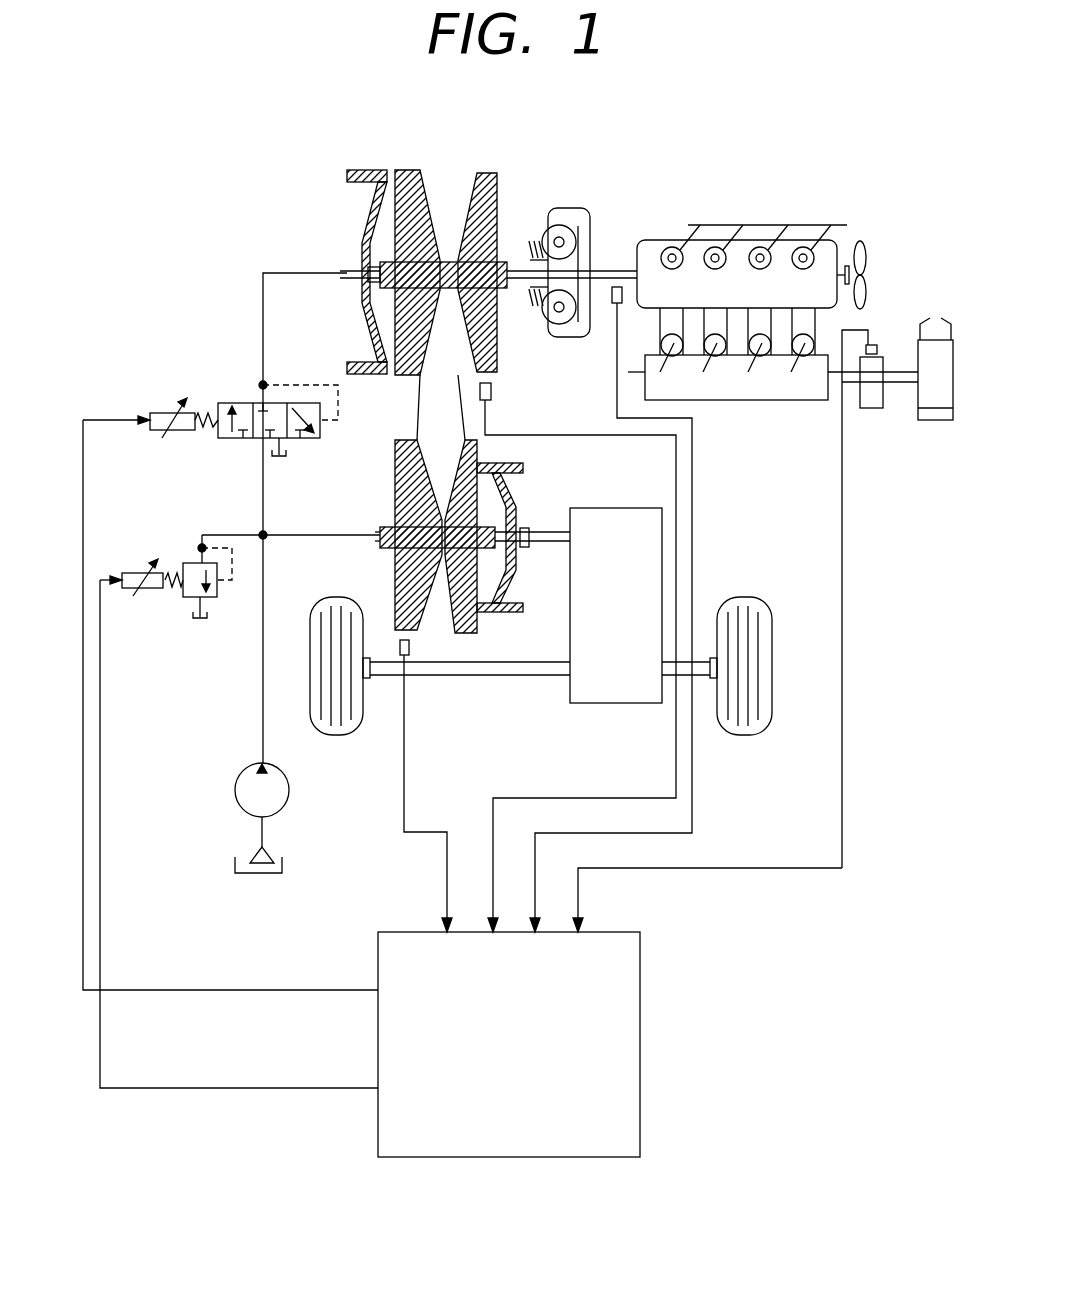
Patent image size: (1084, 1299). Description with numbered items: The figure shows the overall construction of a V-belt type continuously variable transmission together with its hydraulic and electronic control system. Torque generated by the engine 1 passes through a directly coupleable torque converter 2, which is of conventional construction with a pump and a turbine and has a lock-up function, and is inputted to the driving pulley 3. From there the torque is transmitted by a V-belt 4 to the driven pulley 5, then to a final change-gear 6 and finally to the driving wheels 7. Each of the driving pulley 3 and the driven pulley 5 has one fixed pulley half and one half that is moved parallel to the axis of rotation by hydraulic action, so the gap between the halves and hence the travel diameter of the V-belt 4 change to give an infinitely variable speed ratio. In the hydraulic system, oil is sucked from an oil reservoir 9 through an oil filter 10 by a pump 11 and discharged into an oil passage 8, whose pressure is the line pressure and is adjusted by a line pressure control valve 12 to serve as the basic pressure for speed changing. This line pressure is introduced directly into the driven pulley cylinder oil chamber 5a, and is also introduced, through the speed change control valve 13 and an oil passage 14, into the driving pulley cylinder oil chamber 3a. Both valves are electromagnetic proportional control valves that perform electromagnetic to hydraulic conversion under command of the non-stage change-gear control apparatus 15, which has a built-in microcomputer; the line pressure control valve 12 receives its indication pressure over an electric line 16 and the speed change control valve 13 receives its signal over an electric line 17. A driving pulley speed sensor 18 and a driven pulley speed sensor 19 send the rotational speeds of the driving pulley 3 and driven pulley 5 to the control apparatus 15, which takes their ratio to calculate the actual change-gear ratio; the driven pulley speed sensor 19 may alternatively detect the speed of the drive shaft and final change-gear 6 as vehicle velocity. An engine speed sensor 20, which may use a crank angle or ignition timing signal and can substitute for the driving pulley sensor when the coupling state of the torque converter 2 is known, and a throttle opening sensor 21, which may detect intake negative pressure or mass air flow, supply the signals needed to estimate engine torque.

The engine 1 is at (659, 240).
The torque converter 2 is at (586, 229).
The driving pulley 3 is at (474, 258).
The driving pulley cylinder oil chamber 3a is at (382, 234).
The V-belt 4 is at (434, 401).
The driven pulley 5 is at (468, 534).
The driven pulley cylinder oil chamber 5a is at (504, 504).
The final change-gear 6 is at (630, 508).
The driving wheels 7 is at (756, 603).
The oil passage 8 is at (262, 676).
The oil reservoir 9 is at (286, 870).
The oil filter 10 is at (272, 856).
The pump 11 is at (288, 790).
The line pressure control valve 12 is at (186, 560).
The speed change control valve 13 is at (246, 400).
The oil passage 14 is at (265, 337).
The non-stage change-gear control apparatus 15 is at (642, 984).
The electric line 16 is at (292, 1090).
The electric line 17 is at (290, 989).
The driving pulley speed sensor 18 is at (492, 395).
The driven pulley speed sensor 19 is at (410, 648).
The engine speed sensor 20 is at (612, 308).
The throttle opening sensor 21 is at (874, 340).